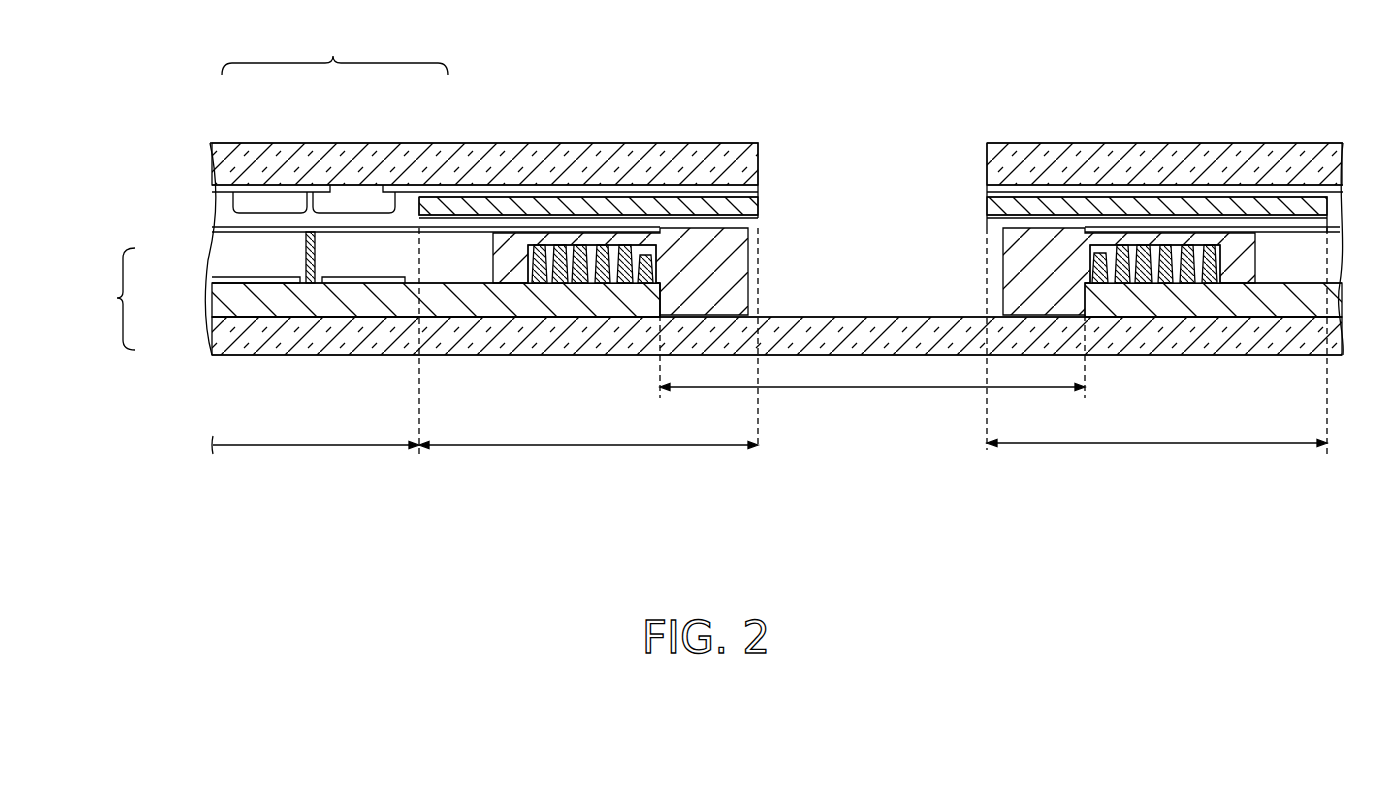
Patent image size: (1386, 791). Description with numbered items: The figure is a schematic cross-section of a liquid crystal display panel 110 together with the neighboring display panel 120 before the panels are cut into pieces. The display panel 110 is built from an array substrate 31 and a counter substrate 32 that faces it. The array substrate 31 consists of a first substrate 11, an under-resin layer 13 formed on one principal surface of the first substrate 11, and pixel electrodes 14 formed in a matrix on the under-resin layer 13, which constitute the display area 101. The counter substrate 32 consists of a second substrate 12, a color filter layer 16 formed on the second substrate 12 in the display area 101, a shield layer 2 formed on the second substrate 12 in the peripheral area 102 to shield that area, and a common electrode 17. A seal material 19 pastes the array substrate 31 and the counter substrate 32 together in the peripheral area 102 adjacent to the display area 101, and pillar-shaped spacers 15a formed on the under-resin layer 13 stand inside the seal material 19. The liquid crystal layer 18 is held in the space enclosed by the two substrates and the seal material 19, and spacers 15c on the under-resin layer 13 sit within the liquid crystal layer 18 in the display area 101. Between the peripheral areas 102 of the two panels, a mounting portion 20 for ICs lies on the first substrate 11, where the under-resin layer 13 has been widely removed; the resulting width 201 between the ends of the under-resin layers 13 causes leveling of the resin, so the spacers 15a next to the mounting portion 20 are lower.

The shield layer 2 is at (427, 203).
The first substrate 11 is at (230, 338).
The second substrate 12 is at (245, 165).
The under-resin layer 13 is at (250, 303).
The pixel electrodes 14 is at (230, 275).
The pillar-shaped spacers 15a is at (560, 245).
The spacers 15c is at (308, 283).
The color filter layer 16 is at (357, 203).
The common electrode 17 is at (642, 227).
The liquid crystal layer 18 is at (230, 242).
The seal material 19 is at (735, 247).
The mounting portion 20 is at (877, 315).
The array substrate 31 is at (110, 299).
The counter substrate 32 is at (335, 51).
The display area 101 is at (300, 447).
The peripheral area 102 is at (588, 447).
The liquid crystal display panel 110 is at (481, 143).
The display panel 120 is at (1295, 143).
The width 201 is at (870, 390).